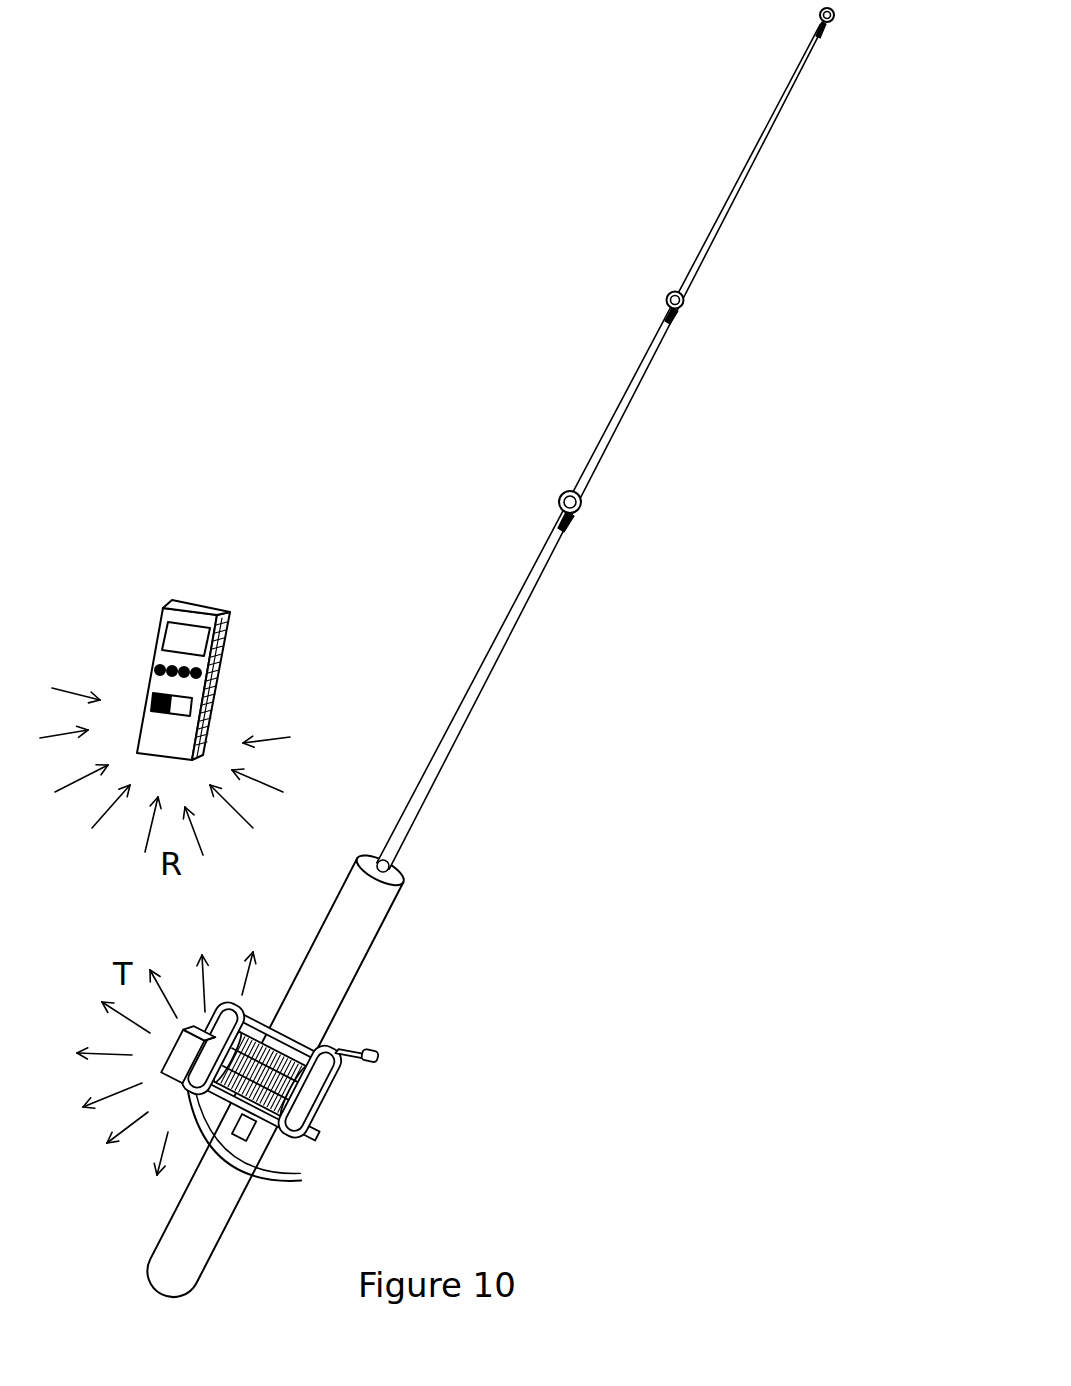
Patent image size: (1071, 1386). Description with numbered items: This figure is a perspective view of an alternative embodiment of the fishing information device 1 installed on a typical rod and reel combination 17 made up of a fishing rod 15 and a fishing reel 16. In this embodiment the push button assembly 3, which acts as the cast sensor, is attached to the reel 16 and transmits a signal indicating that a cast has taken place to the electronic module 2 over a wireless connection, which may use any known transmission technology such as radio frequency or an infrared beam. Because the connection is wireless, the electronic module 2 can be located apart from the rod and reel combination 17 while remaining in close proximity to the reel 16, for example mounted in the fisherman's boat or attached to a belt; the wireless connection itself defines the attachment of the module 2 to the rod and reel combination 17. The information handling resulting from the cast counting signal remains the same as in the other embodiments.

The fishing information device 1 is at (547, 877).
The electronic module 2 is at (267, 694).
The push button assembly 3 is at (171, 1105).
The fishing rod 15 is at (487, 721).
The fishing reel 16 is at (362, 1026).
The rod and reel combination 17 is at (768, 913).